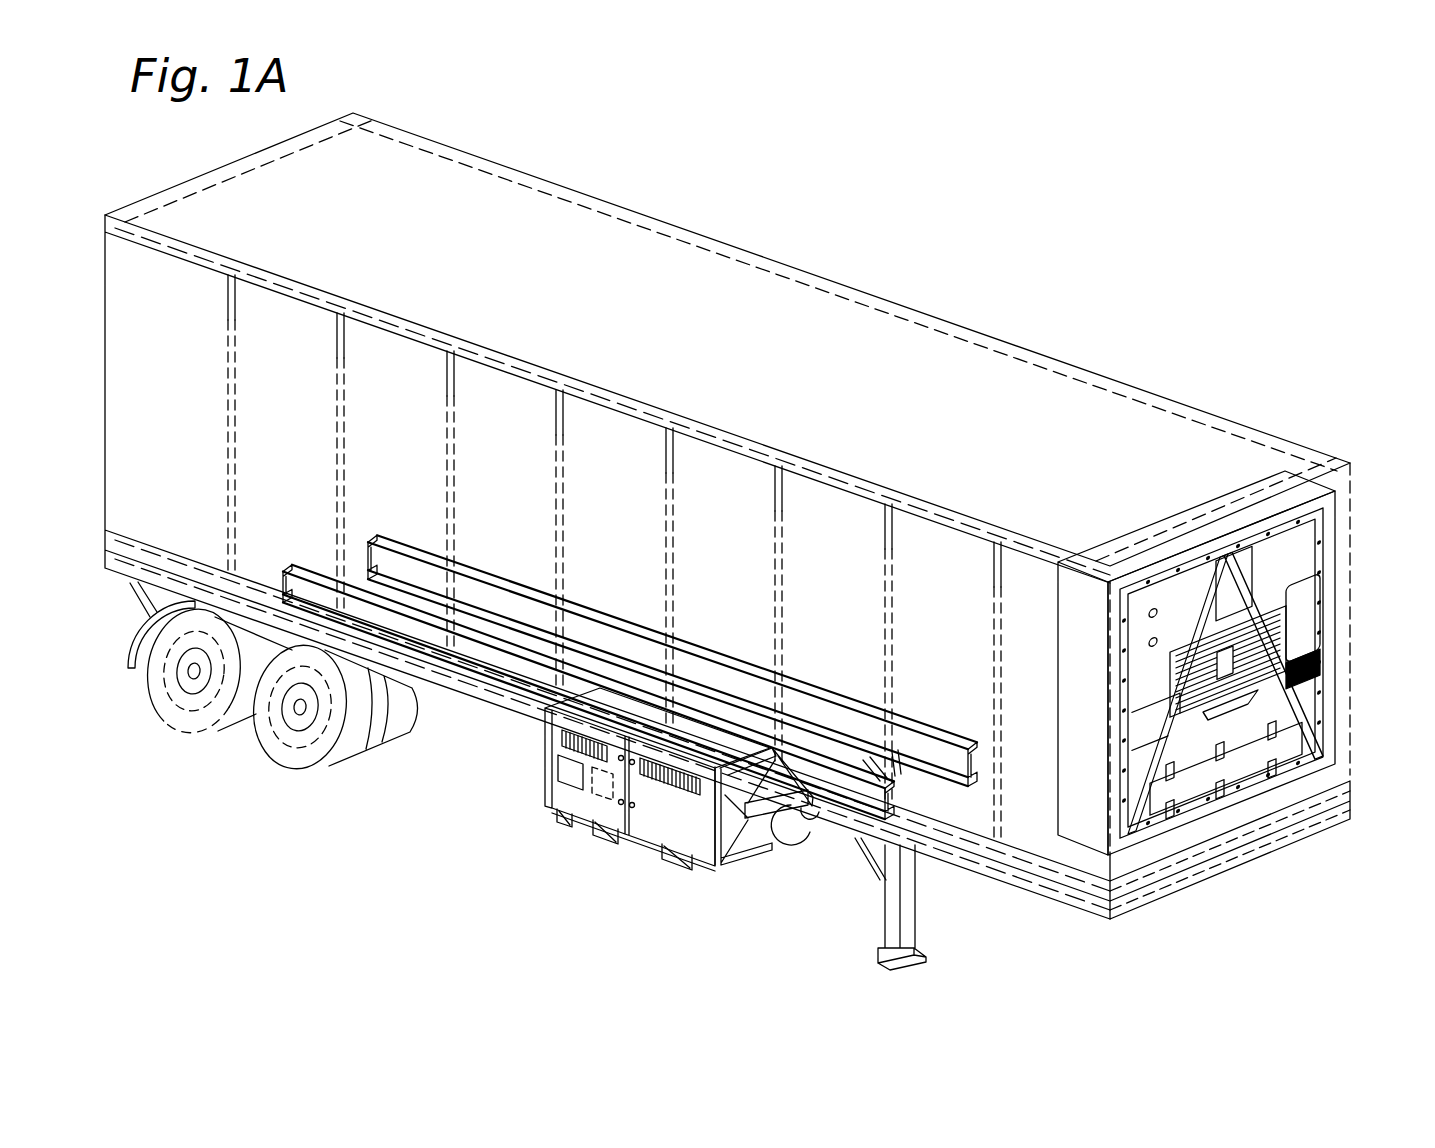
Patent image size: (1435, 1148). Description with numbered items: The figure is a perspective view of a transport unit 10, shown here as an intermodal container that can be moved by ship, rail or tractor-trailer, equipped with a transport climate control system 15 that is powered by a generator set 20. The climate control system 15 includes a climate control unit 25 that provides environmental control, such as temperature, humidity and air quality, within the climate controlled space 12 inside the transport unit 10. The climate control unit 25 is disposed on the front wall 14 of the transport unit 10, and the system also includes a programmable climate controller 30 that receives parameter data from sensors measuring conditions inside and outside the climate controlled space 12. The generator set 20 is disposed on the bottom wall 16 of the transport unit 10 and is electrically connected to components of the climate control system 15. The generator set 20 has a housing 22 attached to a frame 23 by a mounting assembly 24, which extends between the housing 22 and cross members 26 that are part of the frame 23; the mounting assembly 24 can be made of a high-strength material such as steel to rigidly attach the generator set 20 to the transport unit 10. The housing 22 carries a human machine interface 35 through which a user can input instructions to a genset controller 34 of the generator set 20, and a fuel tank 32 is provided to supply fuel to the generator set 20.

The transport unit 10 is at (1130, 205).
The climate controlled space 12 is at (962, 432).
The front wall 14 is at (1244, 614).
The transport climate control system 15 is at (1350, 752).
The bottom wall 16 is at (945, 875).
The generator set 20 is at (648, 813).
The housing 22 is at (655, 815).
The frame 23 is at (485, 690).
The mounting assembly 24 is at (790, 835).
The climate control unit 25 is at (1338, 700).
The cross members 26 is at (942, 757).
The climate controller 30 is at (1313, 625).
The fuel tank 32 is at (815, 835).
The genset controller 34 is at (600, 790).
The human machine interface 35 is at (570, 765).